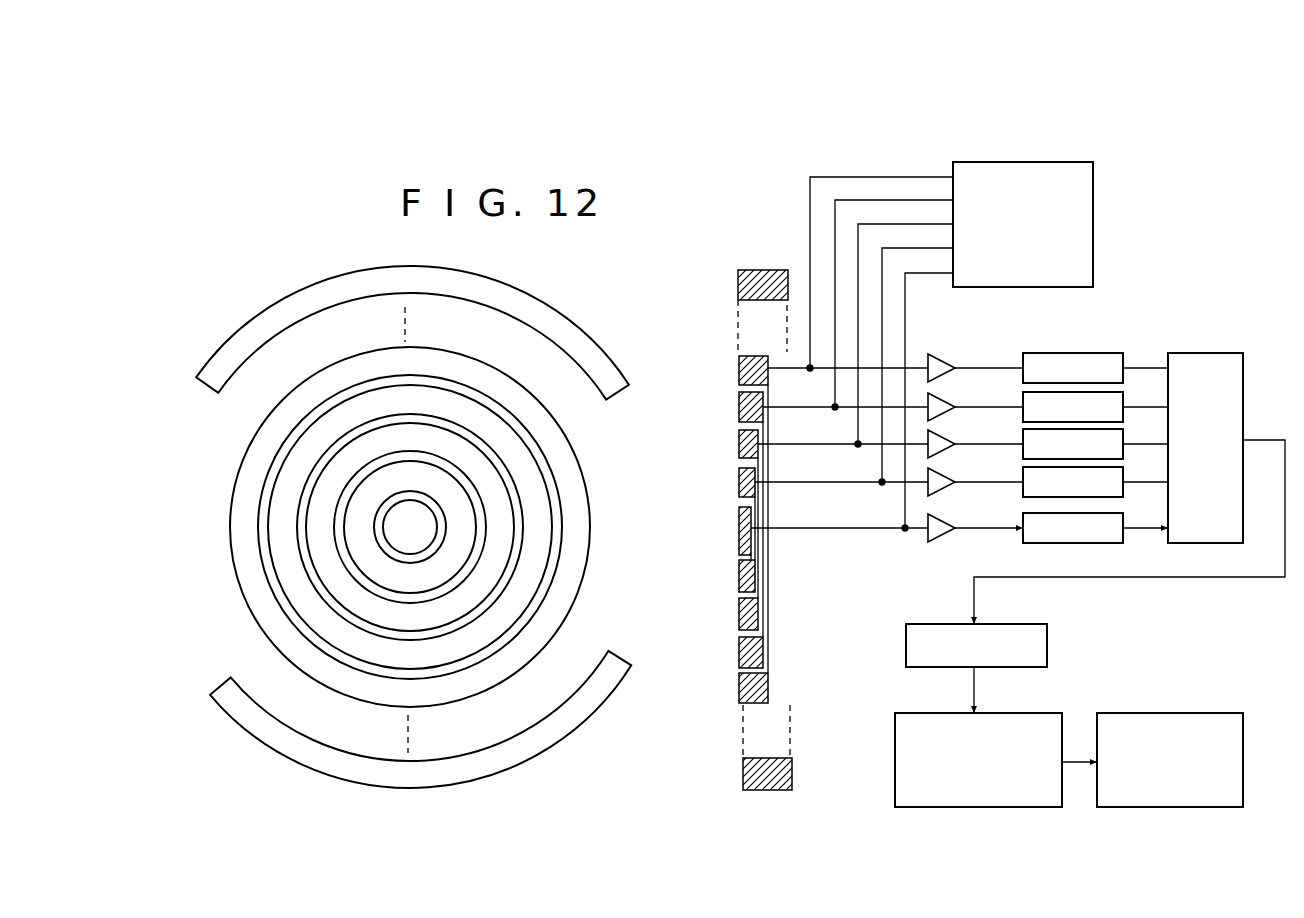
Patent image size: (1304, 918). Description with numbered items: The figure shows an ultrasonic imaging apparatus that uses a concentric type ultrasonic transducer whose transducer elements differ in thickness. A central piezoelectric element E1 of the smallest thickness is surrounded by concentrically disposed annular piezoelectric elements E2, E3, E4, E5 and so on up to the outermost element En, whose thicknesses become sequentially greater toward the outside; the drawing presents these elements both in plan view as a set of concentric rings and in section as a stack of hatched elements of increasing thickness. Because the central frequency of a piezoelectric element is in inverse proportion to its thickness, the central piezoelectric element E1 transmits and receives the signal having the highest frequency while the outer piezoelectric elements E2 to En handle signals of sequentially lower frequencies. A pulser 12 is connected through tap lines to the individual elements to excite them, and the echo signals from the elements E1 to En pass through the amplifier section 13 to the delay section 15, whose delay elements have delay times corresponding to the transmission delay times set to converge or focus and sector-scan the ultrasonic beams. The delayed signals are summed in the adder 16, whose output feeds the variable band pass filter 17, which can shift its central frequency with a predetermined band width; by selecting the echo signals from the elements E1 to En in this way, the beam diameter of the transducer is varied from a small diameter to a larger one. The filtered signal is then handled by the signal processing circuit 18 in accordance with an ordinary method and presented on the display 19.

The pulser 12 is at (1094, 213).
The amplifier section 13 is at (940, 356).
The delay section 15 is at (1070, 356).
The adder 16 is at (1192, 353).
The variable band pass filter 17 is at (1047, 645).
The signal processing circuit 18 is at (1033, 713).
The display 19 is at (1167, 713).
The central piezoelectric element E1 is at (427, 533).
The annular piezoelectric element E2 is at (470, 517).
The annular piezoelectric element E3 is at (498, 500).
The annular piezoelectric element E4 is at (527, 468).
The annular piezoelectric element E5 is at (557, 427).
The outermost annular piezoelectric element En is at (585, 333).